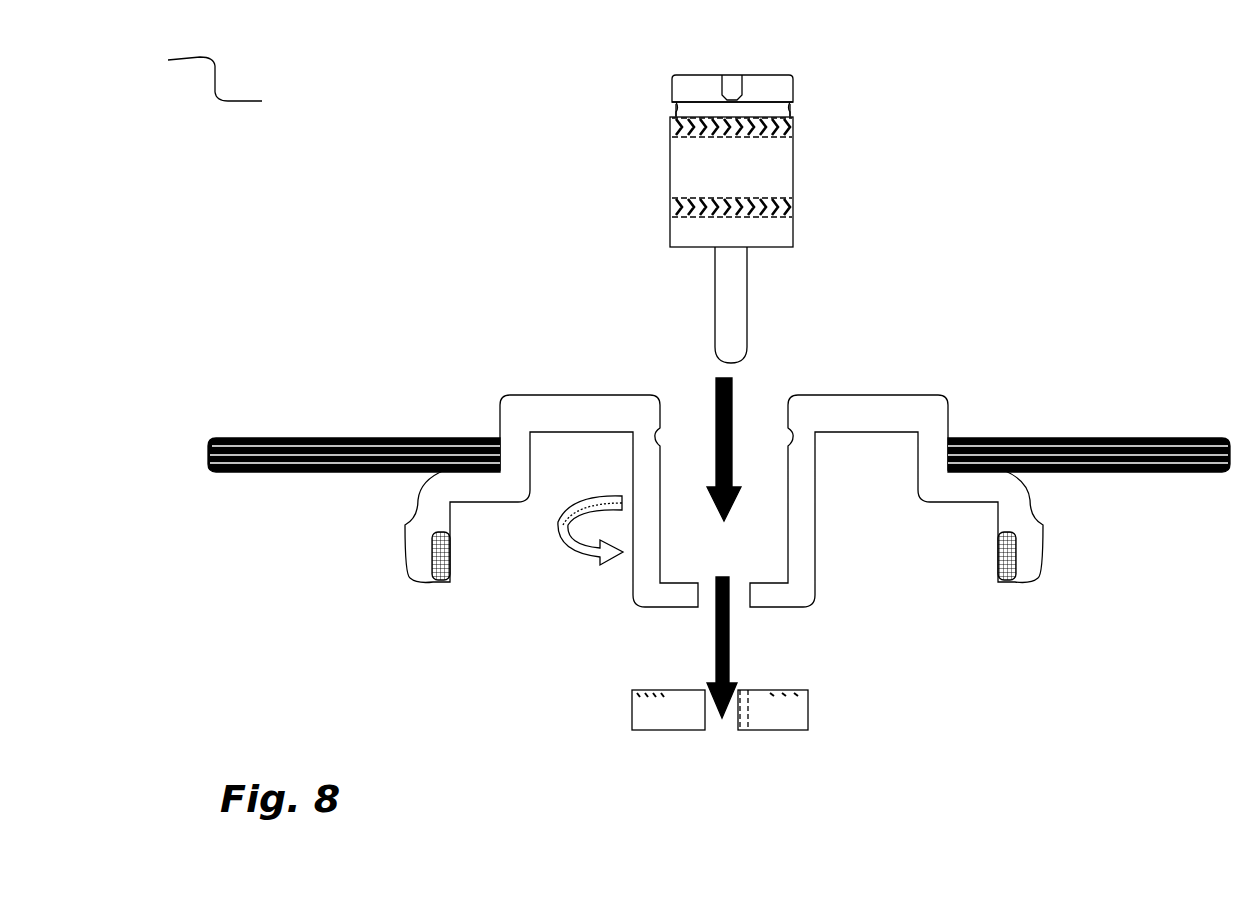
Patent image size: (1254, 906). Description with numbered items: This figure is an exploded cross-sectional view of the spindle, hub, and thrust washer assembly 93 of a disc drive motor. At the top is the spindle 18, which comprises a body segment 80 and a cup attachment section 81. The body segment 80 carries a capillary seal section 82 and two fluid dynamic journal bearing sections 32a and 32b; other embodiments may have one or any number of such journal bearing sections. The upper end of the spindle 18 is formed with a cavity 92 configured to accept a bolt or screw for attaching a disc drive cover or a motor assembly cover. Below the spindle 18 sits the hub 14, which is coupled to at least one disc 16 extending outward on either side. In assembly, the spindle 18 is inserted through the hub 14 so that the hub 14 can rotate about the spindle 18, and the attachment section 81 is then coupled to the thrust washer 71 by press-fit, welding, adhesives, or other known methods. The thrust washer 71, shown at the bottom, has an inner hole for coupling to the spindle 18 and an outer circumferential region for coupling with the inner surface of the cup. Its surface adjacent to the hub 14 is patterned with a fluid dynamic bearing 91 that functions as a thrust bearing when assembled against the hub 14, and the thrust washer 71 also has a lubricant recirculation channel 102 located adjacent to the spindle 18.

The spindle, hub, and thrust washer assembly 93 is at (199, 76).
The cavity 92 is at (730, 72).
The capillary seal section 82 is at (668, 108).
The fluid dynamic journal bearing section 32a is at (657, 120).
The fluid dynamic journal bearing section 32b is at (657, 197).
The body segment 80 is at (810, 77).
The cup attachment section 81 is at (696, 258).
The spindle 18 is at (760, 358).
The hub 14 is at (583, 412).
The disc 16 is at (390, 438).
The fluid dynamic bearing 91 is at (690, 667).
The thrust washer 71 is at (775, 705).
The lubricant recirculation channel 102 is at (747, 710).